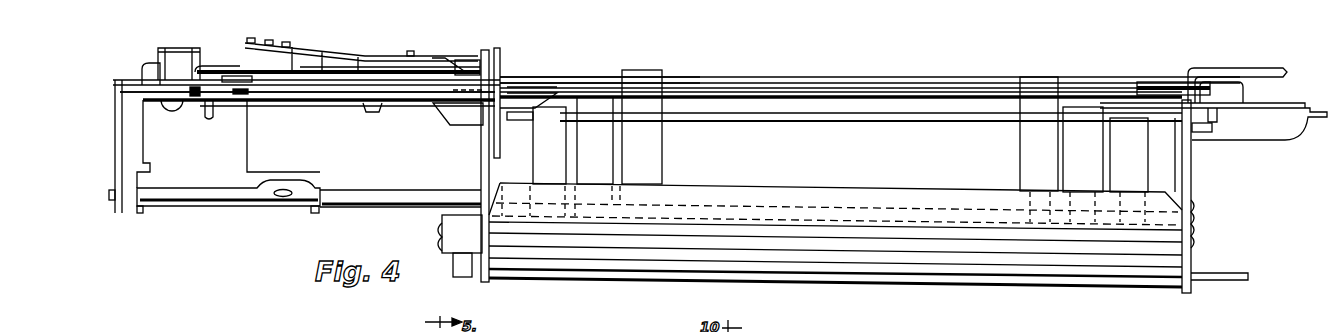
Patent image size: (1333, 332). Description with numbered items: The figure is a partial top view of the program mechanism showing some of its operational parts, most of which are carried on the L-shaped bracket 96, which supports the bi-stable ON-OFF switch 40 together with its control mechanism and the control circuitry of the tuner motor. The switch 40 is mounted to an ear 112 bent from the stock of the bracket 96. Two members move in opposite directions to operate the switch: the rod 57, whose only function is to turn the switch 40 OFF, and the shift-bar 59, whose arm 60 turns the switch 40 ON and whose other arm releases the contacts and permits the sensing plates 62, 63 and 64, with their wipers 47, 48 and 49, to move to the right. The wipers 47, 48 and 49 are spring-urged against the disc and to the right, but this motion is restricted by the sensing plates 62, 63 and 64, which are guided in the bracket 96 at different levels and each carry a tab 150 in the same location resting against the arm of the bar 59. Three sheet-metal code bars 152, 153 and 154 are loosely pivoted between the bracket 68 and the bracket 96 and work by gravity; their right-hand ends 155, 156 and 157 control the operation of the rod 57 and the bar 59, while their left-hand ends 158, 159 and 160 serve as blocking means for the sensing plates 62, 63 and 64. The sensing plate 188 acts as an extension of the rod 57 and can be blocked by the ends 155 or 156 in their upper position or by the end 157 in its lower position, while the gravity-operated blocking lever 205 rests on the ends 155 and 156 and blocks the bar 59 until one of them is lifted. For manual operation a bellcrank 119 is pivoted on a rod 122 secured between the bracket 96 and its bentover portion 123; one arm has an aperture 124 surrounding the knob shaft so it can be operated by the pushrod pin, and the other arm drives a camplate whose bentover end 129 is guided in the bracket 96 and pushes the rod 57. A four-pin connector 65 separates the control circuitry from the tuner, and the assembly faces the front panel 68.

The bi-stable switch 40 is at (174, 44).
The ear 112 is at (195, 48).
The wiper 47 is at (250, 38).
The wiper 48 is at (269, 40).
The wiper 49 is at (287, 42).
The rod 57 is at (420, 71).
The sensing plate 63 is at (497, 49).
The code bar end 160 is at (520, 67).
The code bar end 159 is at (528, 90).
The code bar end 157 is at (1243, 87).
The arm 60 is at (148, 64).
The bentover end 129 is at (231, 75).
The sensing plate 64 is at (467, 67).
The code bar end 156 is at (1215, 116).
The sensing plate 188 is at (1284, 138).
The L-shaped bracket 96 is at (277, 92).
The shift-bar 59 is at (336, 102).
The tab 150 is at (374, 112).
The sensing plate 62 is at (458, 107).
The code bar end 158 is at (515, 120).
The code bar 152 is at (562, 159).
The code bar 153 is at (606, 147).
The code bar 154 is at (651, 137).
The blocking lever 205 is at (1180, 184).
The code bar end 155 is at (1206, 133).
The bellcrank 119 is at (208, 176).
The rod 122 is at (384, 190).
The aperture 124 is at (283, 197).
The bentover portion 123 is at (118, 214).
The 4-pin connector 65 is at (468, 246).
The front panel / bracket 68 is at (1192, 219).